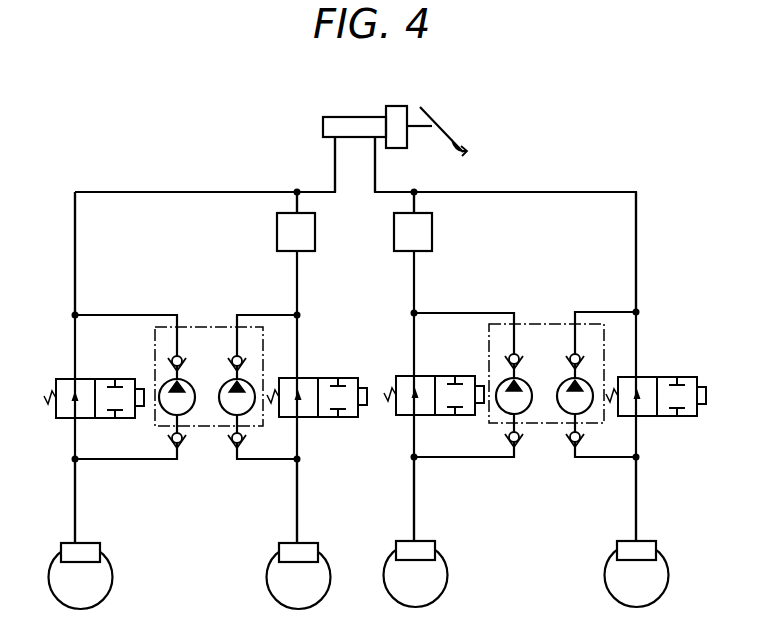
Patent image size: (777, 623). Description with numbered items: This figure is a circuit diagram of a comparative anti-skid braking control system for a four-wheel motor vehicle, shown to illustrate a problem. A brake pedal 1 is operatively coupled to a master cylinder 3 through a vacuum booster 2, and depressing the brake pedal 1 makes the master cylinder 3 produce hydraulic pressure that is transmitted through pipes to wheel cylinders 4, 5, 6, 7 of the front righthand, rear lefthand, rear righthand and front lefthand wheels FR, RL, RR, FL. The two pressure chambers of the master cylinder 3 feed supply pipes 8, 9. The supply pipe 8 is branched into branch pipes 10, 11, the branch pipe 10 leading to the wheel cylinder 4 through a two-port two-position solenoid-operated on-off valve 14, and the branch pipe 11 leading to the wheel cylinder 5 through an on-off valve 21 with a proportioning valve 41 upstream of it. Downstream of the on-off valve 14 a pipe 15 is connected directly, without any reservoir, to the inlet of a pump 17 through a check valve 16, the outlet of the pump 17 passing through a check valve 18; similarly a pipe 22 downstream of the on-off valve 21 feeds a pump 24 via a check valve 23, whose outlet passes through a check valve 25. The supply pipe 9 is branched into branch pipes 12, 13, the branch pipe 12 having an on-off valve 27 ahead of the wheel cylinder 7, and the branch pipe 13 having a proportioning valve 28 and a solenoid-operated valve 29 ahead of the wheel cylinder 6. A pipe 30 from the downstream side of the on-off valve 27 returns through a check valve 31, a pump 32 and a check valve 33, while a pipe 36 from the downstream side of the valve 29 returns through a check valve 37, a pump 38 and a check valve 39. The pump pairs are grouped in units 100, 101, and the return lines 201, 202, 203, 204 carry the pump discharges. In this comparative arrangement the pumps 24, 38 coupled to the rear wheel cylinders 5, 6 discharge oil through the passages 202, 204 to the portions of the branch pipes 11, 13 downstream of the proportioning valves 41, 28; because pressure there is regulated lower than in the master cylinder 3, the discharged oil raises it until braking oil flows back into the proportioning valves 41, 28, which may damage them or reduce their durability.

The brake pedal 1 is at (440, 126).
The vacuum booster 2 is at (398, 110).
The master cylinder 3 is at (353, 117).
The wheel cylinder 4 is at (99, 552).
The wheel cylinder 5 is at (317, 552).
The wheel cylinder 6 is at (435, 550).
The wheel cylinder 7 is at (657, 547).
The supply pipe 8 is at (335, 160).
The supply pipe 9 is at (375, 166).
The branch pipe 10 is at (163, 191).
The branch pipe 11 is at (300, 200).
The branch pipe 12 is at (587, 191).
The branch pipe 13 is at (411, 201).
The solenoid-operated on-off valve 14 is at (68, 405).
The pipe 15 is at (112, 461).
The check valve 16 is at (177, 452).
The pump 17 is at (163, 388).
The check valve 18 is at (175, 355).
The solenoid-operated on-off valve 21 is at (310, 410).
The pipe 22 is at (268, 461).
The check valve 23 is at (234, 452).
The pump 24 is at (250, 390).
The check valve 25 is at (238, 355).
The solenoid-operated on-off valve 27 is at (650, 410).
The proportioning valve 28 is at (432, 226).
The solenoid-operated valve 29 is at (402, 405).
The pipe 30 is at (613, 459).
The check valve 31 is at (573, 452).
The pump 32 is at (593, 390).
The check valve 33 is at (578, 352).
The pipe 36 is at (458, 459).
The check valve 37 is at (512, 453).
The pump 38 is at (498, 388).
The check valve 39 is at (512, 352).
The proportioning valve 41 is at (277, 227).
The pump unit 100 is at (218, 327).
The pump unit 101 is at (540, 324).
The hydraulic line 201 is at (105, 315).
The passage 202 is at (270, 315).
The hydraulic line 203 is at (615, 312).
The passage 204 is at (434, 313).